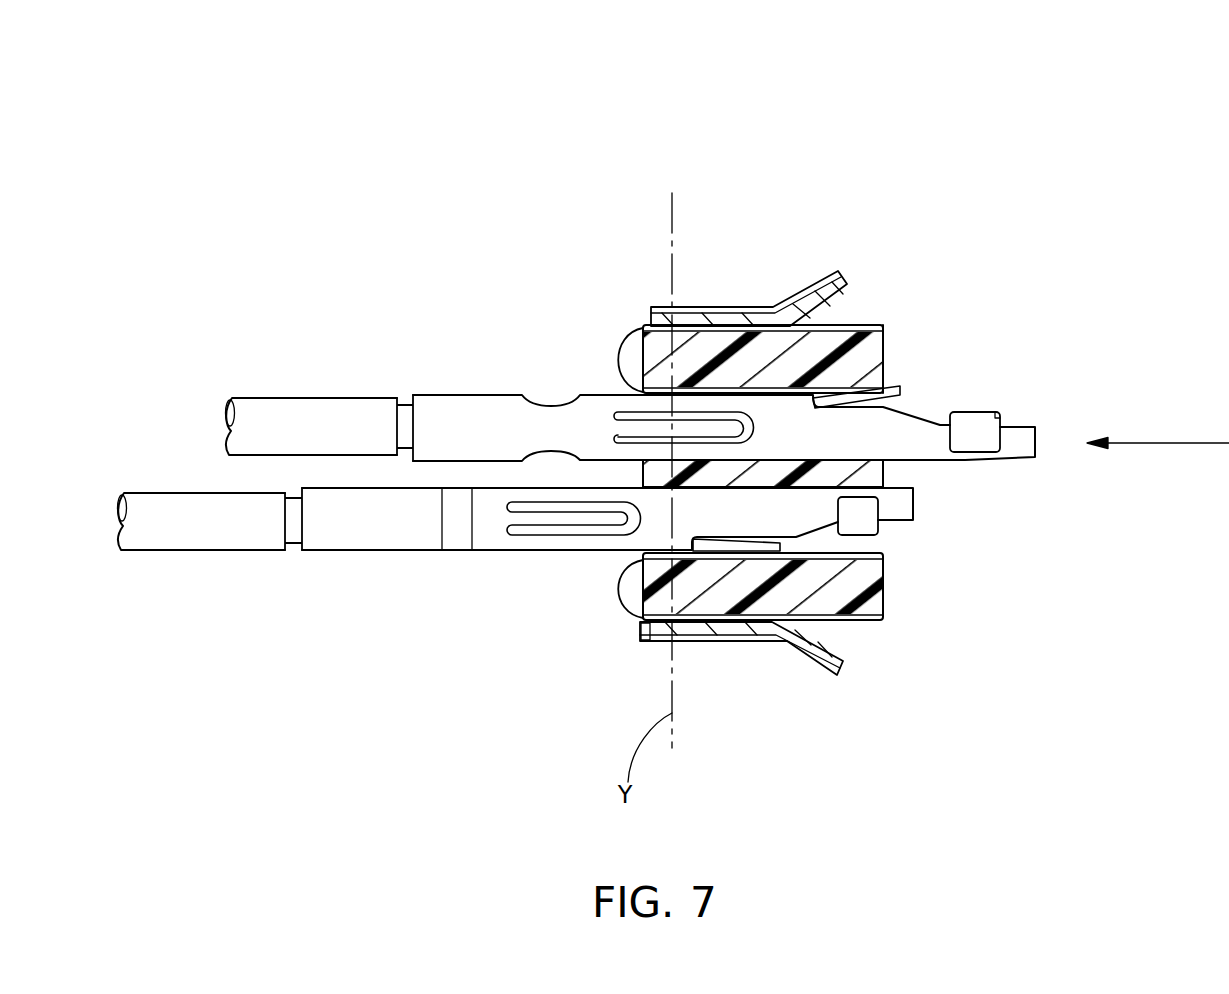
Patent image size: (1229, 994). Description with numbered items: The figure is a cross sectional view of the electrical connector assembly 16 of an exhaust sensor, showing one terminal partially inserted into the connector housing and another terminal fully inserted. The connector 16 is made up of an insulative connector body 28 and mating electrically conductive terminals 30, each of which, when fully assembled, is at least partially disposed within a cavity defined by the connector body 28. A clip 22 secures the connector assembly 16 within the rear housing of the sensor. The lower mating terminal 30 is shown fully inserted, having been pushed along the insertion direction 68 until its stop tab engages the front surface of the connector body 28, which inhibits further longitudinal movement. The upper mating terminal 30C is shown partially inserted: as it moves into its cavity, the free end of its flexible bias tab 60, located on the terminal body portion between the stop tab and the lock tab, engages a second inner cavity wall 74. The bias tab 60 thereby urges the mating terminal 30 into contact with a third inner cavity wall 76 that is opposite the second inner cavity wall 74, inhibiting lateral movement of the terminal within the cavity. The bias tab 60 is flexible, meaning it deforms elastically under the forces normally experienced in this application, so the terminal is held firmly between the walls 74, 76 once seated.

The electrical connector assembly 16 is at (626, 157).
The clip 22 is at (822, 288).
The connector body 28 is at (716, 338).
The mating terminal 30 is at (503, 519).
The upper mating terminal 30C is at (600, 427).
The bias tab 60 is at (896, 390).
The insertion direction 68 is at (1161, 443).
The second inner cavity wall 74 is at (873, 330).
The third inner cavity wall 76 is at (777, 460).